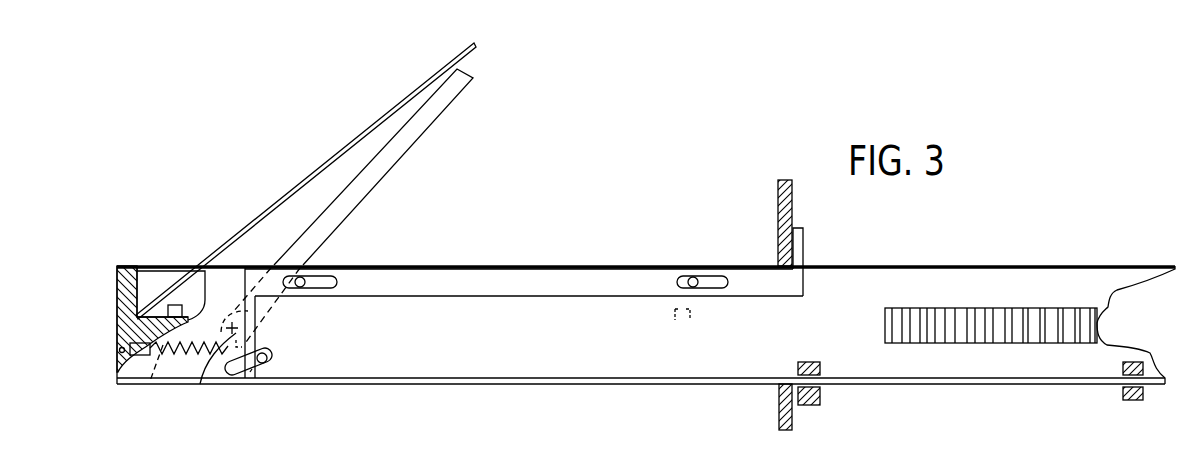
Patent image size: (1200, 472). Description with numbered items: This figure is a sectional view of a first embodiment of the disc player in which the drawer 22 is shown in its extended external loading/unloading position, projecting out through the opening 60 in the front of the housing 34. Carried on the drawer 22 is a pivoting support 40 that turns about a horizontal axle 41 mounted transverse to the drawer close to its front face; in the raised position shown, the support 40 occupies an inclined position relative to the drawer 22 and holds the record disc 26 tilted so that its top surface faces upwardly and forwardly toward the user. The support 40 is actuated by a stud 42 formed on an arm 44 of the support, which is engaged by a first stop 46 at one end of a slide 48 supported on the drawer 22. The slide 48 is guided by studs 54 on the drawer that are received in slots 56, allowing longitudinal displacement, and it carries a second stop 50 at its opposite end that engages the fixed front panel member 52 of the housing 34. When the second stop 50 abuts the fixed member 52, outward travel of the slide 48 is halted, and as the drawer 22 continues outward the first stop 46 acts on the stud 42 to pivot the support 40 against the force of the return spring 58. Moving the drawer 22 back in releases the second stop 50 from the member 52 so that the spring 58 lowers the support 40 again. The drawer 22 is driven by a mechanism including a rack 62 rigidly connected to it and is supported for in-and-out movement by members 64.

The drawer 22 is at (562, 392).
The record disc 26 is at (293, 190).
The housing 34 is at (778, 419).
The support 40 is at (417, 137).
The axle 41 is at (212, 369).
The stud 42 is at (268, 360).
The arm 44 is at (245, 333).
The stop 46 is at (252, 370).
The slide 48 is at (577, 280).
The second stop 50 is at (803, 248).
The fixed member 52 is at (793, 203).
The studs 54 is at (303, 280).
The slots 56 is at (333, 282).
The return spring 58 is at (151, 385).
The opening 60 is at (773, 258).
The rack 62 is at (995, 318).
The members 64 is at (813, 407).